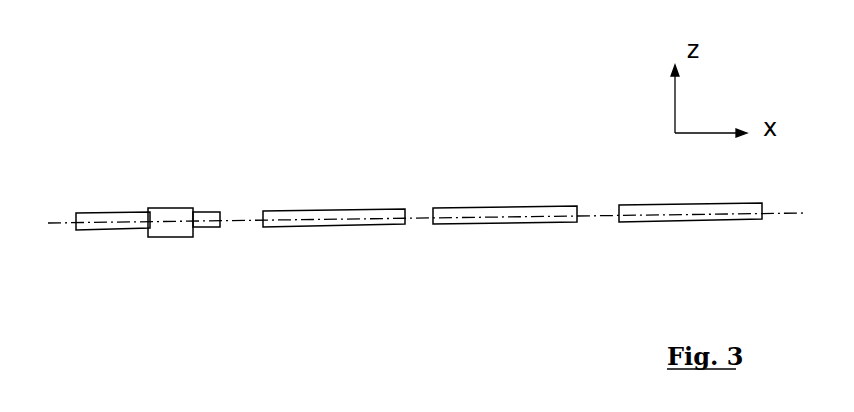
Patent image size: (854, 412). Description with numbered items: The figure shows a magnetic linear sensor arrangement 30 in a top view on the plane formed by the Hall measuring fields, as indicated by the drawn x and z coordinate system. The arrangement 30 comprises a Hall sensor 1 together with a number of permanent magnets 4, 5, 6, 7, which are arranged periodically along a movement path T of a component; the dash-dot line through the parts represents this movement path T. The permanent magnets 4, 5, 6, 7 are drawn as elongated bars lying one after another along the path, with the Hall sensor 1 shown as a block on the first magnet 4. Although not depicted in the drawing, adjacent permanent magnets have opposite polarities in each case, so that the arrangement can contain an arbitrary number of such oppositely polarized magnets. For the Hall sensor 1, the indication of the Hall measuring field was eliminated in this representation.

The magnetic linear sensor arrangement 30 is at (361, 113).
The Hall sensor 1 is at (178, 222).
The permanent magnet 4 is at (107, 213).
The permanent magnet 5 is at (320, 210).
The permanent magnet 6 is at (507, 222).
The permanent magnet 7 is at (633, 222).
The movement path T is at (588, 218).